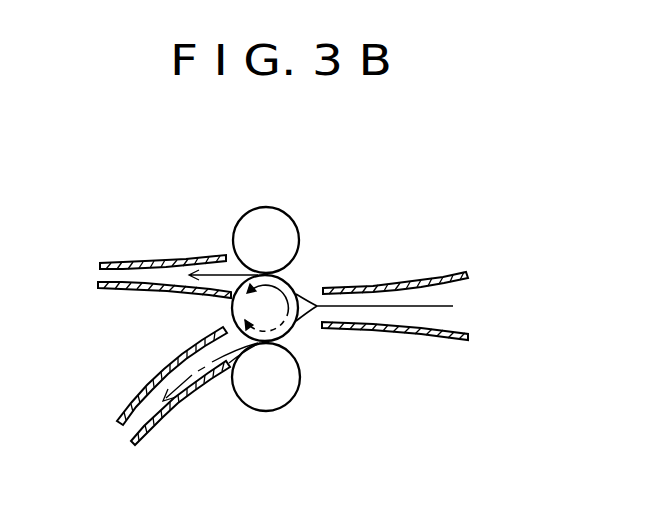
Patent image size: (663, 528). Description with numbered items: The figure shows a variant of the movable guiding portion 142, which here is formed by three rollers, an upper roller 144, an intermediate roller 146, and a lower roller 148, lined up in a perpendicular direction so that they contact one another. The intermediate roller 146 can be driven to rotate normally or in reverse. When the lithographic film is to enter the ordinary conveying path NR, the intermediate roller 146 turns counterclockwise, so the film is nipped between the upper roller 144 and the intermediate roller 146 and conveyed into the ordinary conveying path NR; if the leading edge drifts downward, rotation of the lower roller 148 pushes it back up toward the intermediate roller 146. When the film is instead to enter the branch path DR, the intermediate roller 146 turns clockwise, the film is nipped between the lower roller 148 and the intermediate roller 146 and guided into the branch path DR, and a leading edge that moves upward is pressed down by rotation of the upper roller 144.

The movable guiding portion 142 is at (329, 263).
The upper roller 144 is at (291, 214).
The intermediate roller 146 is at (292, 278).
The lower roller 148 is at (300, 372).
The ordinary conveying path NR is at (168, 263).
The branch path DR is at (152, 428).